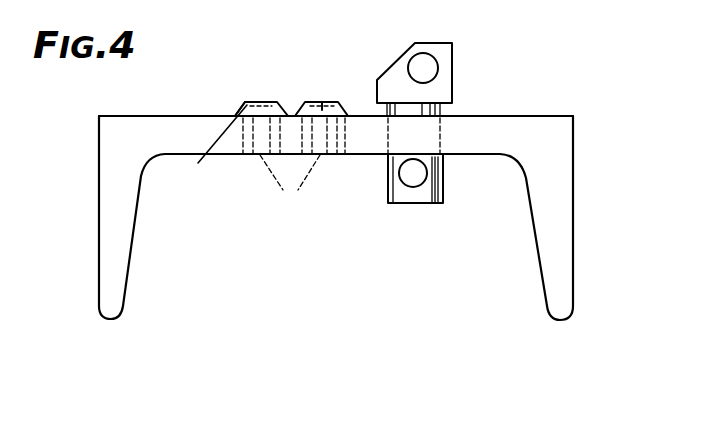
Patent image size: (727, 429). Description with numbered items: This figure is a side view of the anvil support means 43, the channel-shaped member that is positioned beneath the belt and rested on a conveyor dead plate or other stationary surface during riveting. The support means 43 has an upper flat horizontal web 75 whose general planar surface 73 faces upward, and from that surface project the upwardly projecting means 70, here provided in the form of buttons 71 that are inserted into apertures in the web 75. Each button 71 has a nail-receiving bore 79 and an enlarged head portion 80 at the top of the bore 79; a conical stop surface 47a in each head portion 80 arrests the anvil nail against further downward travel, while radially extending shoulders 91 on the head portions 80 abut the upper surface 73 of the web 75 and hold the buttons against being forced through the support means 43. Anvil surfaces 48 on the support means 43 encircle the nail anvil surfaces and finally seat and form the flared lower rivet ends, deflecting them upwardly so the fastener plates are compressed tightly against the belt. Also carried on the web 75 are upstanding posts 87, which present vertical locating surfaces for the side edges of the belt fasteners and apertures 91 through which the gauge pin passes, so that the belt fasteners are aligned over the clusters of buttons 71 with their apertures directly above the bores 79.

The anvil support means 43 is at (542, 95).
The general planar surface 73 is at (125, 115).
The upper flat horizontal web 75 is at (363, 143).
The buttons 71 is at (311, 91).
The upwardly projecting means 70 is at (222, 102).
The anvil surfaces 48 is at (252, 100).
The slot 47a is at (325, 100).
The bore 79 is at (290, 183).
The enlarged head portions 80 is at (214, 149).
The upstanding posts 87 is at (474, 70).
The radially extending shoulders 91 is at (420, 62).